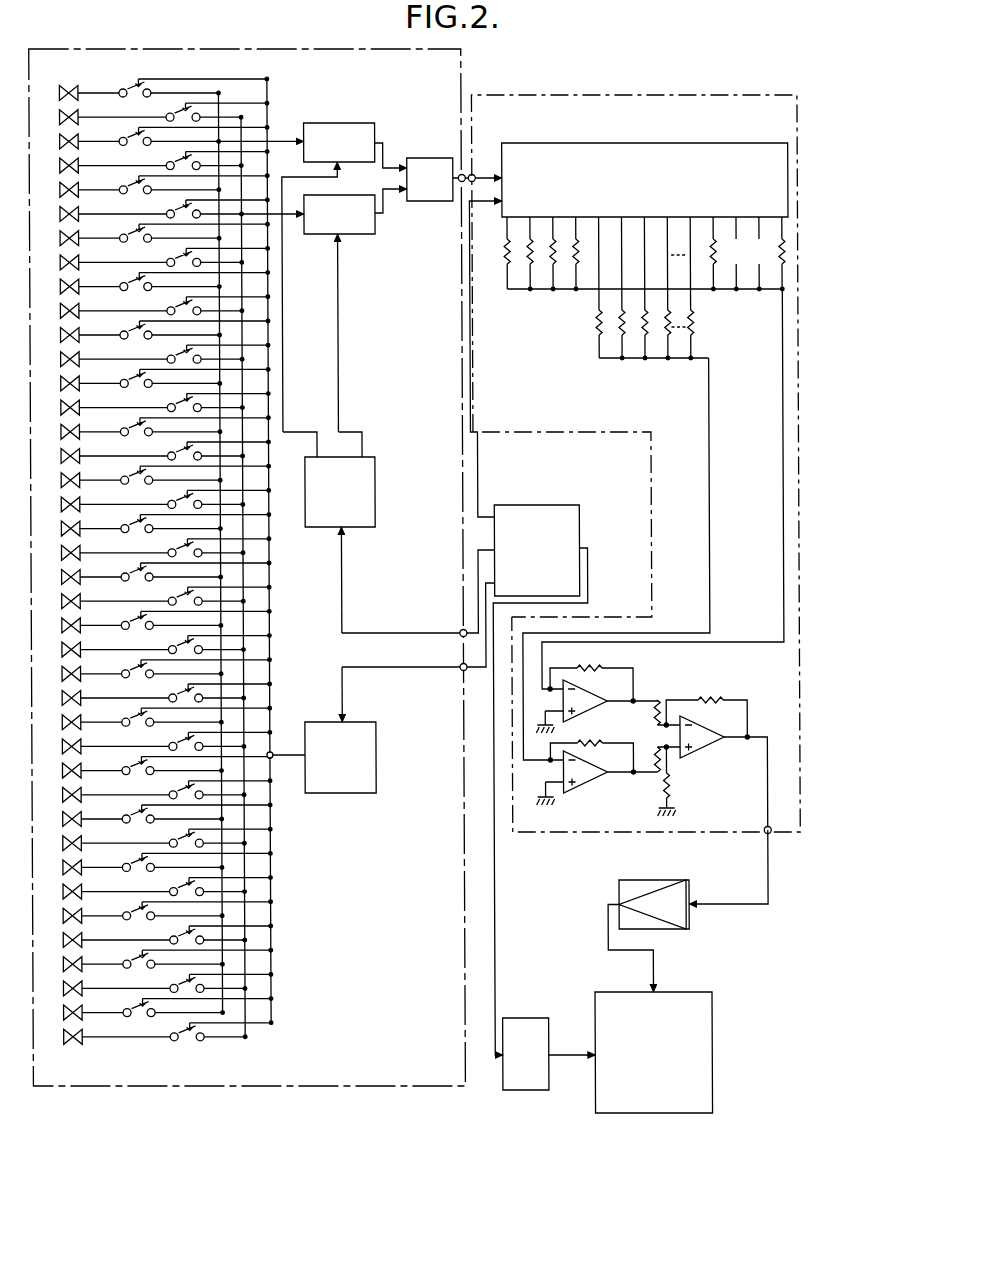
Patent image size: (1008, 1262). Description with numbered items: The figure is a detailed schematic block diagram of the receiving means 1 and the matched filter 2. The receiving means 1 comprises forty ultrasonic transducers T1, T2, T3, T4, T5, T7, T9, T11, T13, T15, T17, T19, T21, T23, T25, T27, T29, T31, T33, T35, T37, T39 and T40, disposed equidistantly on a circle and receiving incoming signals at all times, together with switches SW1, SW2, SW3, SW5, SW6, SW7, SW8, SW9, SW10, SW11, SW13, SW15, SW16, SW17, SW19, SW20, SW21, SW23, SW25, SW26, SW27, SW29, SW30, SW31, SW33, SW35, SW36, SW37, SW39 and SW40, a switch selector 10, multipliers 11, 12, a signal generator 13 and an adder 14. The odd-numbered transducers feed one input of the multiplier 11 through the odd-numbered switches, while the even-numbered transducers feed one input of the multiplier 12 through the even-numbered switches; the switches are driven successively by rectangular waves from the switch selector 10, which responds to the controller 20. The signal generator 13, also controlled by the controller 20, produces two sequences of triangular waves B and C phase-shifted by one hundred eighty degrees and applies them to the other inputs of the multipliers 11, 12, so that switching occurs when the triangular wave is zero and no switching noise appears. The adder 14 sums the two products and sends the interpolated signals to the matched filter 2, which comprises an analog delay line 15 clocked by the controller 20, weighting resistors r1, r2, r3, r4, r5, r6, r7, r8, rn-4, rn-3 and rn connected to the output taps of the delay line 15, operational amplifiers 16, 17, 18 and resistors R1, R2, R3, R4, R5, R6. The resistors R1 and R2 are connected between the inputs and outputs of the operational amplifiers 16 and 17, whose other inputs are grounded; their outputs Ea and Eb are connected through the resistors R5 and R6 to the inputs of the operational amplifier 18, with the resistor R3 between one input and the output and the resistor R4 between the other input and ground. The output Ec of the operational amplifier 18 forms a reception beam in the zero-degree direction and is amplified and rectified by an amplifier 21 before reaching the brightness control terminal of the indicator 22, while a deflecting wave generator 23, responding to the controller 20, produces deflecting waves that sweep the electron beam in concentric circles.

The receiving means 1 is at (225, 49).
The matched filter 2 is at (562, 95).
The switch selector 10 is at (319, 795).
The multiplier 11 is at (317, 123).
The multiplier 12 is at (347, 236).
The signal generator 13 is at (352, 528).
The adder 14 is at (410, 158).
The analog delay line 15 is at (645, 143).
The operational amplifier 16 is at (590, 694).
The operational amplifier 17 is at (596, 792).
The operational amplifier 18 is at (706, 751).
The controller 20 is at (501, 505).
The amplifier 21 is at (641, 868).
The indicator 22 is at (693, 1038).
The deflecting wave generator 23 is at (520, 1018).
The ultrasonic transducer T1 is at (59, 93).
The ultrasonic transducer T2 is at (59, 117).
The ultrasonic transducer T3 is at (59, 141).
The ultrasonic transducer T4 is at (59, 166).
The ultrasonic transducer T5 is at (59, 190).
The ultrasonic transducer T7 is at (59, 238).
The ultrasonic transducer T9 is at (59, 287).
The ultrasonic transducer T11 is at (59, 335).
The ultrasonic transducer T13 is at (59, 383).
The ultrasonic transducer T15 is at (59, 432).
The ultrasonic transducer T17 is at (59, 480).
The ultrasonic transducer T19 is at (59, 529).
The ultrasonic transducer T21 is at (59, 577).
The ultrasonic transducer T23 is at (59, 625).
The ultrasonic transducer T25 is at (59, 674).
The ultrasonic transducer T27 is at (59, 722).
The ultrasonic transducer T29 is at (59, 771).
The ultrasonic transducer T31 is at (59, 819).
The ultrasonic transducer T33 is at (59, 867).
The ultrasonic transducer T35 is at (59, 916).
The ultrasonic transducer T37 is at (59, 964).
The ultrasonic transducer T39 is at (59, 1013).
The ultrasonic transducer T40 is at (59, 1037).
The switch SW1 is at (134, 81).
The switch SW2 is at (181, 112).
The switch SW3 is at (134, 135).
The switch SW5 is at (134, 184).
The switch SW6 is at (181, 209).
The switch SW7 is at (134, 232).
The switch SW8 is at (181, 257).
The switch SW9 is at (134, 281).
The switch SW10 is at (181, 306).
The switch SW11 is at (134, 329).
The switch SW13 is at (134, 377).
The switch SW15 is at (134, 426).
The switch SW16 is at (181, 451).
The switch SW17 is at (134, 474).
The switch SW19 is at (134, 523).
The switch SW20 is at (181, 548).
The switch SW21 is at (134, 571).
The switch SW23 is at (134, 619).
The switch SW25 is at (134, 668).
The switch SW26 is at (181, 693).
The switch SW27 is at (134, 716).
The switch SW29 is at (134, 765).
The switch SW30 is at (181, 790).
The switch SW31 is at (134, 813).
The switch SW33 is at (134, 861).
The switch SW35 is at (134, 910).
The switch SW36 is at (181, 935).
The switch SW37 is at (134, 958).
The switch SW39 is at (134, 1007).
The switch SW40 is at (181, 1032).
The resistor r1 is at (507, 252).
The resistor r2 is at (532, 257).
The resistor r3 is at (555, 260).
The resistor r4 is at (577, 257).
The resistor r5 is at (598, 330).
The resistor r6 is at (620, 330).
The resistor r7 is at (643, 328).
The resistor r8 is at (667, 328).
The resistor rn-4 is at (690, 335).
The resistor rn-3 is at (710, 260).
The resistor rn is at (781, 270).
The resistor R1 is at (596, 668).
The resistor R2 is at (596, 741).
The resistor R3 is at (700, 700).
The resistor R4 is at (665, 794).
The resistor R5 is at (656, 704).
The resistor R6 is at (658, 763).
The output of operational amplifier 16 Ea is at (633, 689).
The output of operational amplifier 17 Eb is at (632, 786).
The output of operational amplifier 18 Ec is at (747, 785).
The triangular wave B is at (310, 309).
The triangular wave C is at (350, 345).